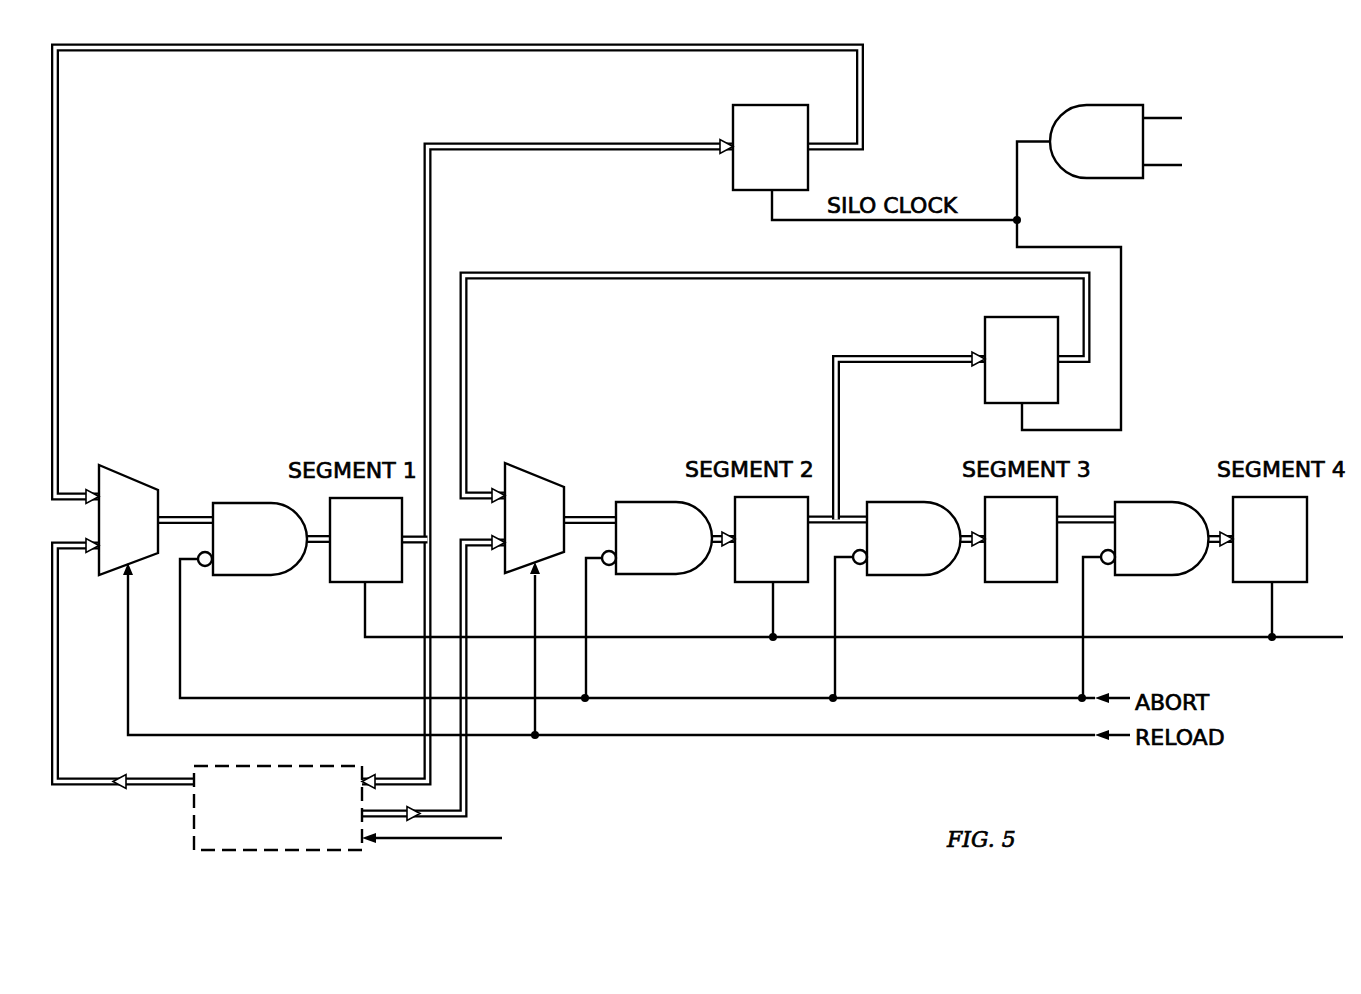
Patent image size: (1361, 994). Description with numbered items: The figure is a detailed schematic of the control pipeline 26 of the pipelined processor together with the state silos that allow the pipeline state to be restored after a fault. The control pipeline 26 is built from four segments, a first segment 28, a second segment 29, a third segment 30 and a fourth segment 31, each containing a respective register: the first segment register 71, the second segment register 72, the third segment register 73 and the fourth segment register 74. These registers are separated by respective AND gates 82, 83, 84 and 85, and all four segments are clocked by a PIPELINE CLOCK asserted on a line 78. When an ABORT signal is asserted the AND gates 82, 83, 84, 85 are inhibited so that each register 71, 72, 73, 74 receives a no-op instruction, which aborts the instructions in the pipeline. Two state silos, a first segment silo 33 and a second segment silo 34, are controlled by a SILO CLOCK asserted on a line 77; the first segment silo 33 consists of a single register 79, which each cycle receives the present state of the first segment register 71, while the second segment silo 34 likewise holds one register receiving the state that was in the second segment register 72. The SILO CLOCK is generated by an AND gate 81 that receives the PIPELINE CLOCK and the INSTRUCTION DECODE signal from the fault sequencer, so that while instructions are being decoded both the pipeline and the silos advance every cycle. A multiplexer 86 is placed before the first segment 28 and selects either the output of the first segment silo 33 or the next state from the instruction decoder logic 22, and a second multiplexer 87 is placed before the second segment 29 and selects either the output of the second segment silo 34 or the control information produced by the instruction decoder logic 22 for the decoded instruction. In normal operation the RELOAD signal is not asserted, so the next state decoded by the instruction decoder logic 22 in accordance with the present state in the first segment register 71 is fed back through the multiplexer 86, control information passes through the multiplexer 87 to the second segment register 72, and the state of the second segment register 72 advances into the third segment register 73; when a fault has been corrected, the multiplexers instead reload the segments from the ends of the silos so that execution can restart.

The instruction decoder logic 22 is at (280, 853).
The control pipeline 26 is at (1233, 414).
The first control pipeline segment 28 is at (163, 436).
The second control pipeline segment 29 is at (551, 426).
The third control pipeline segment 30 is at (949, 492).
The fourth control pipeline segment 31 is at (1204, 492).
The segment 1 silo 33 is at (905, 146).
The segment 2 silo 34 is at (1140, 379).
The segment 1 register 71 is at (343, 583).
The segment 2 register 72 is at (745, 583).
The segment 3 register 73 is at (1020, 583).
The segment 4 register 74 is at (1253, 583).
The SILO CLOCK line 77 is at (1121, 268).
The PIPELINE CLOCK line 78 is at (1305, 637).
The segment 1 silo register 79 is at (735, 112).
The AND gate 81 is at (1095, 105).
The AND gate 82 is at (262, 576).
The AND gate 83 is at (655, 574).
The AND gate 84 is at (907, 576).
The AND gate 85 is at (1167, 576).
The multiplexer 86 is at (140, 481).
The second multiplexer 87 is at (535, 476).